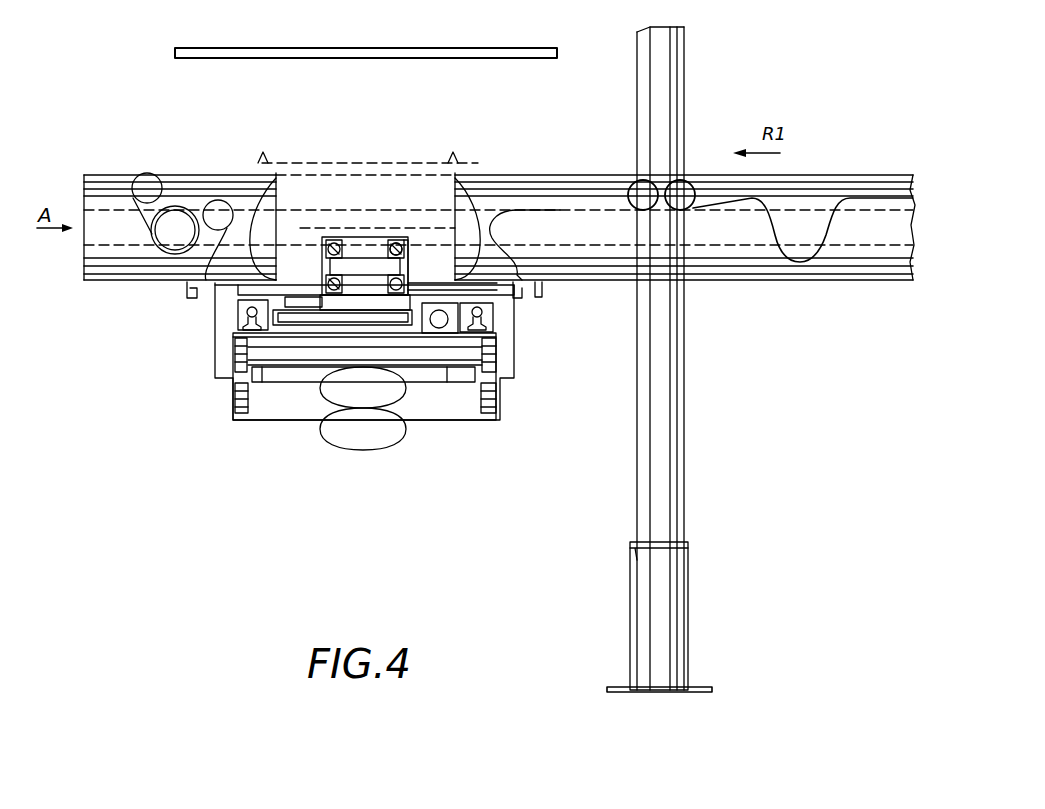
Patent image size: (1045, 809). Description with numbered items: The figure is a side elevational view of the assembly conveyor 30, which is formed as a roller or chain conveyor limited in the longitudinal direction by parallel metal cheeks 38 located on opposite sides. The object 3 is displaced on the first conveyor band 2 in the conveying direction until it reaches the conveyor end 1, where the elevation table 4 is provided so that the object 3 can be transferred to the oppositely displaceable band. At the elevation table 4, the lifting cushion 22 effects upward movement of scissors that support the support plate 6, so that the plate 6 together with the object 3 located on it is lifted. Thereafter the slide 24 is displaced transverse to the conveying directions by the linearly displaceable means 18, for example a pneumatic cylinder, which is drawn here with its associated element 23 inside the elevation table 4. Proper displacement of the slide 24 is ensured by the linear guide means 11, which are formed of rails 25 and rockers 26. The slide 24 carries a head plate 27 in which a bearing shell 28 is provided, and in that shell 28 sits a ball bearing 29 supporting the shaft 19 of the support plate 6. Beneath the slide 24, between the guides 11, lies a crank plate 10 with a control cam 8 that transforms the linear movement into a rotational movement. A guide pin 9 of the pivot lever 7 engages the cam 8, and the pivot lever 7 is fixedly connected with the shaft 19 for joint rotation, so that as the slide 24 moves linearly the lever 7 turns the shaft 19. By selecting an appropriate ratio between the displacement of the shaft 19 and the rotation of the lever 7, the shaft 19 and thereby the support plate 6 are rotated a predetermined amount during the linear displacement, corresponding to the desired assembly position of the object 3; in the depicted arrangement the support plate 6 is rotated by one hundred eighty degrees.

The assembly conveyor end 1 is at (85, 175).
The conveyor band 2 is at (848, 240).
The object 3 is at (514, 52).
The elevation table 4 is at (222, 404).
The support plate 6 is at (476, 160).
The pivot lever 7 is at (306, 298).
The control cam 8 is at (303, 322).
The guide pin 9 is at (288, 298).
The crank plate 10 is at (285, 330).
The linear guide means 11 is at (497, 317).
The linearly displaceable means 18 is at (455, 362).
The shaft 19 is at (348, 245).
The lifting cushion 22 is at (340, 448).
The piston rod 23 is at (437, 353).
The slide 24 is at (222, 301).
The rails 25 is at (235, 327).
The rockers 26 is at (240, 318).
The head plate 27 is at (495, 297).
The bearing shell 28 is at (420, 240).
The ball bearing 29 is at (397, 242).
The assembly conveyor 30 is at (355, 488).
The metal cheeks 38 is at (782, 280).